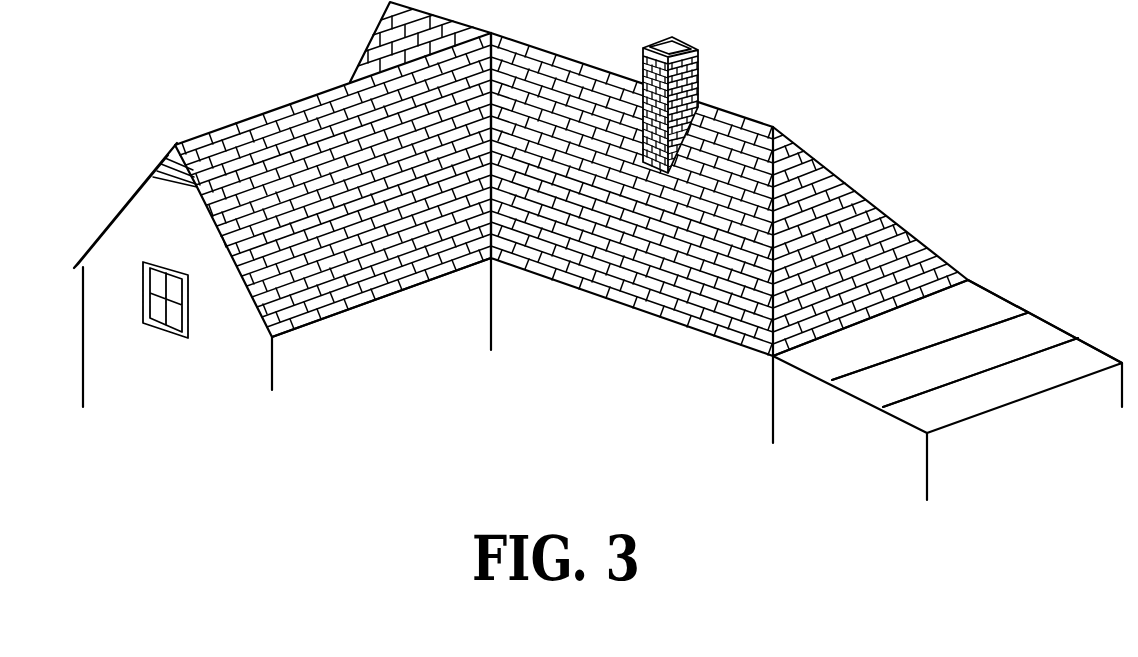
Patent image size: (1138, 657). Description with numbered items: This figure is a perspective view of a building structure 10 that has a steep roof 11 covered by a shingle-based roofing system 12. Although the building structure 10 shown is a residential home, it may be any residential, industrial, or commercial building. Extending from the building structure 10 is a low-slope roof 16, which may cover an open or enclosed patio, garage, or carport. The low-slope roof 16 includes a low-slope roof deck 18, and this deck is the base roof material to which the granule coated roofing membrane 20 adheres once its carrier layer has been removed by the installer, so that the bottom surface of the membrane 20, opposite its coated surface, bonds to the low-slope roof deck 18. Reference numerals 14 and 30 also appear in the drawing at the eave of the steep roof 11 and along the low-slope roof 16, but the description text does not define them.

The building structure 10 is at (123, 189).
The steep roof 11 is at (258, 308).
The shingle-based roofing system 12 is at (272, 110).
The eave / drip edge 14 is at (356, 308).
The low-slope roof 16 is at (1028, 253).
The low-slope roof deck 18 is at (1080, 363).
The roofing membrane 20 is at (988, 307).
The seams between membrane panels 30 is at (950, 336).